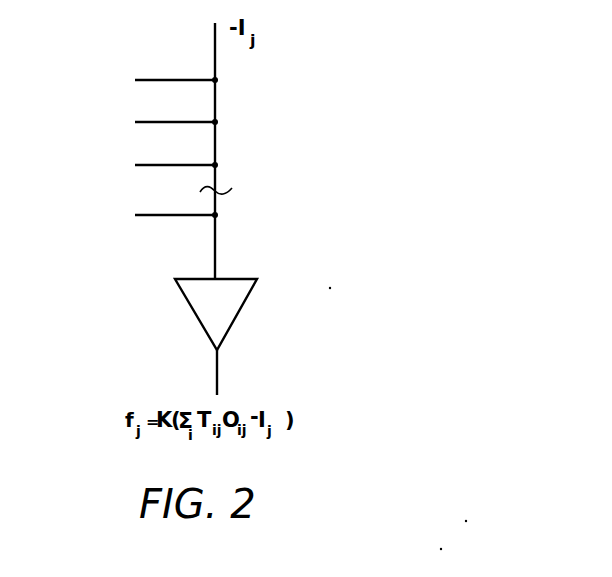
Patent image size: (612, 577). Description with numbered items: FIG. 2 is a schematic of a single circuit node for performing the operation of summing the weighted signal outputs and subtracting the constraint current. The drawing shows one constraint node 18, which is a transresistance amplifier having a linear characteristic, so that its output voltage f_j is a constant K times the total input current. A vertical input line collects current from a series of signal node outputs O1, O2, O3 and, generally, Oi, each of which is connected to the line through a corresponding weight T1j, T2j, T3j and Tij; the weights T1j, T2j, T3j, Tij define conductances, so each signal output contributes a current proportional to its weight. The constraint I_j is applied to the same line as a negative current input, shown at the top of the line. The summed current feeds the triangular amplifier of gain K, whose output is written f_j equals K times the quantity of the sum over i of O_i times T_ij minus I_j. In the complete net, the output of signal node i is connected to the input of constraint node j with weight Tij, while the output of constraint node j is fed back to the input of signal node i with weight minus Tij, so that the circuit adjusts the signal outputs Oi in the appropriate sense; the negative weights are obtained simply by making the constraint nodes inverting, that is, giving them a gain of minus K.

The constraint node 18 is at (281, 148).
The signal node output O1 is at (157, 77).
The signal node output O2 is at (157, 119).
The signal node output O3 is at (157, 162).
The signal node output Oi is at (157, 211).
The connection weight T1j is at (243, 84).
The connection weight T2j is at (243, 126).
The connection weight T3j is at (243, 169).
The connection weight Tij is at (240, 218).
The gain constant K is at (216, 314).